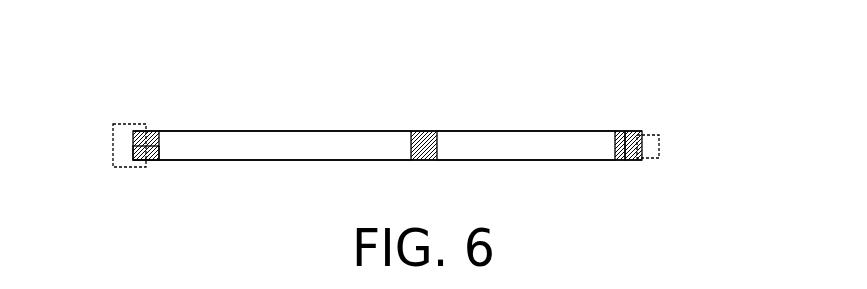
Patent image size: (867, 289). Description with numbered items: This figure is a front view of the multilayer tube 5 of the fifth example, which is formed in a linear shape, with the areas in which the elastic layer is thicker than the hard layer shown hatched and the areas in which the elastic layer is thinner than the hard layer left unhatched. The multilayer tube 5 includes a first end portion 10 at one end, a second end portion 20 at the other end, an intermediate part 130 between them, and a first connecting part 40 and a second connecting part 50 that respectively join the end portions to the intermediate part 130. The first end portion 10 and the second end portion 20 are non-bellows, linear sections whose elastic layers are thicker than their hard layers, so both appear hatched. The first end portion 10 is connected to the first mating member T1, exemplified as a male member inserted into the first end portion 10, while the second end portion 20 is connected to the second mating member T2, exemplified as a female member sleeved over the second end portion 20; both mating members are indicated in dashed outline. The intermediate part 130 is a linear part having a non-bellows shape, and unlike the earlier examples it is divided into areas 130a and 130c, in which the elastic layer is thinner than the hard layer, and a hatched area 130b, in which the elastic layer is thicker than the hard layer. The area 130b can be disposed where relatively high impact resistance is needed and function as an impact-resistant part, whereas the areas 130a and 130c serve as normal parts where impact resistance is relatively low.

The multilayer tube 5 is at (692, 85).
The first end portion 10 is at (630, 131).
The second end portion 20 is at (150, 131).
The first connecting part 40 is at (617, 160).
The second connecting part 50 is at (158, 160).
The intermediate part 130 is at (523, 60).
The area in which elastic layer is thinner than hard layer 130a is at (492, 131).
The area in which elastic layer is thicker than hard layer 130b is at (427, 131).
The area in which elastic layer is thinner than hard layer 130c is at (353, 131).
The first mating member T1 is at (650, 135).
The second mating member T2 is at (129, 124).